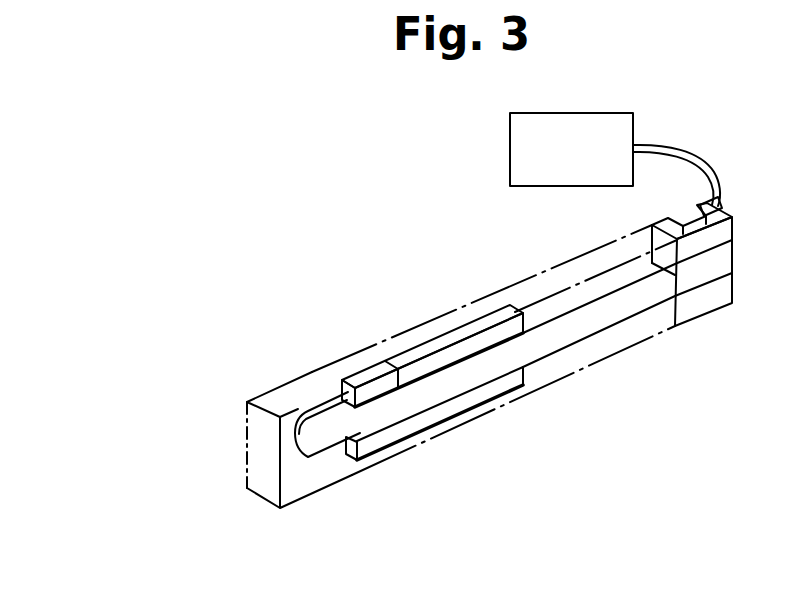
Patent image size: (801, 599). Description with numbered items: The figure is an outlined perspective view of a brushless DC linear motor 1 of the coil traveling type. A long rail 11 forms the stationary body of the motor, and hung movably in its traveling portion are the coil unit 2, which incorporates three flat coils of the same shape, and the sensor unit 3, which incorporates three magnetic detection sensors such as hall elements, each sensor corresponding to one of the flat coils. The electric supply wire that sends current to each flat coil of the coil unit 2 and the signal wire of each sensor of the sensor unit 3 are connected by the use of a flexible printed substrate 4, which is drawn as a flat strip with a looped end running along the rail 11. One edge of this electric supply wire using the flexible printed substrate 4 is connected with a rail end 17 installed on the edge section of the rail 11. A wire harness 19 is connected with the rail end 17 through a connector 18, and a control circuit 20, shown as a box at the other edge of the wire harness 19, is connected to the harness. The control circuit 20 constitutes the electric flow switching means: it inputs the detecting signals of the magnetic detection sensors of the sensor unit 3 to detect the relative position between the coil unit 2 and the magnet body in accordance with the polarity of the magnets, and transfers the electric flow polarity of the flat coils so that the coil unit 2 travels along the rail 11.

The brushless DC linear motor 1 is at (408, 245).
The coil unit 2 is at (473, 397).
The sensor unit 3 is at (375, 443).
The flexible printed substrate 4 is at (343, 428).
The rail 11 is at (247, 466).
The rail end 17 is at (707, 302).
The connector 18 is at (710, 198).
The wire harness 19 is at (668, 147).
The control circuit 20 is at (552, 162).